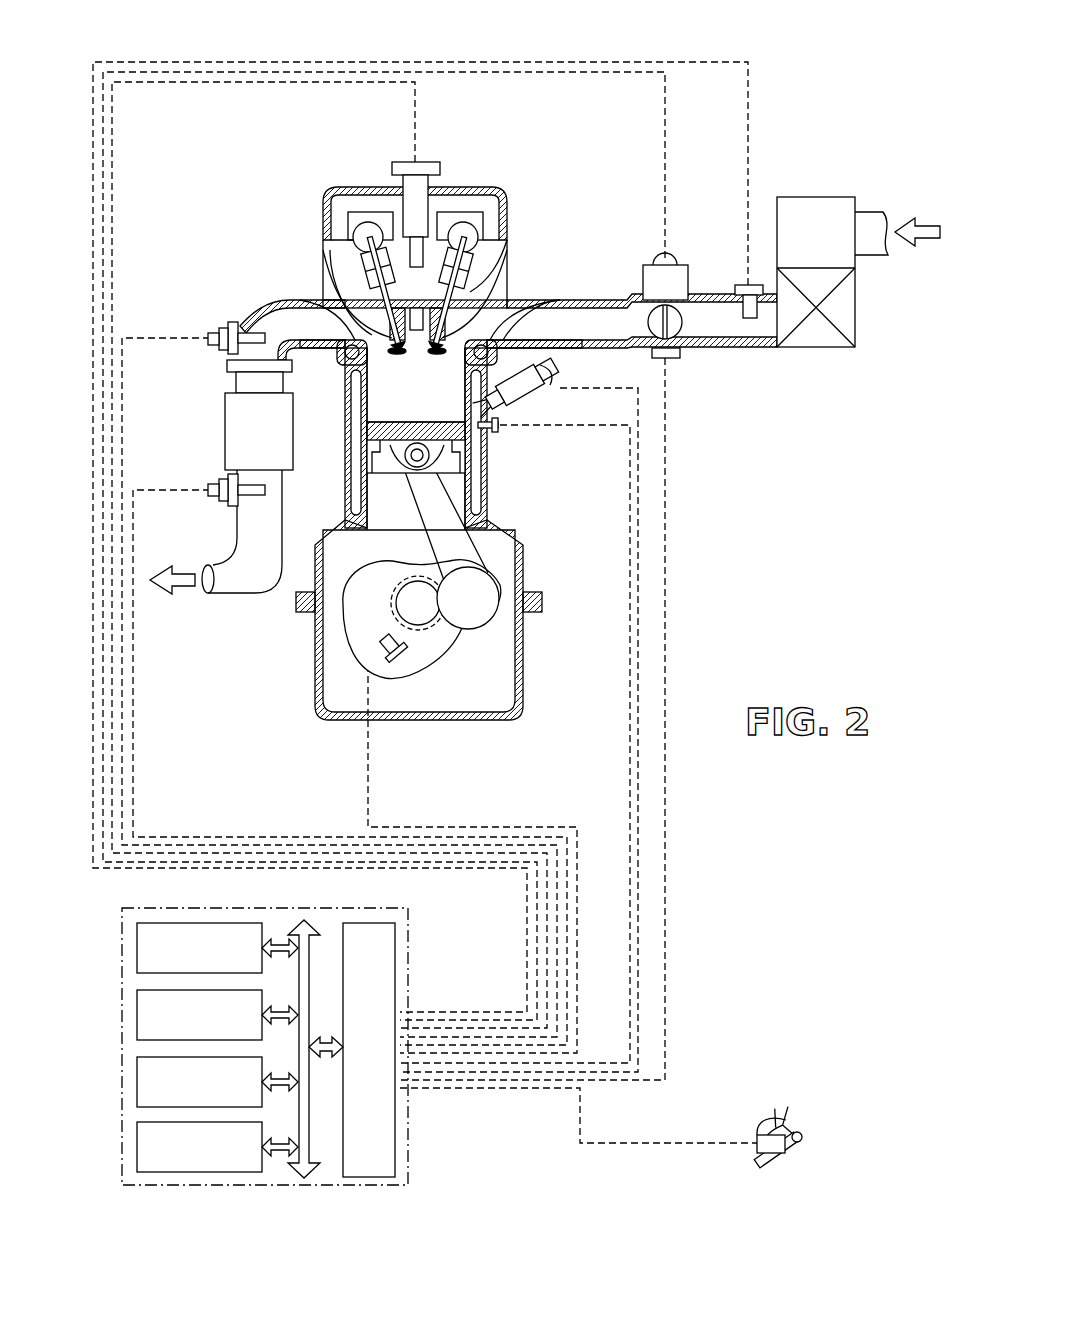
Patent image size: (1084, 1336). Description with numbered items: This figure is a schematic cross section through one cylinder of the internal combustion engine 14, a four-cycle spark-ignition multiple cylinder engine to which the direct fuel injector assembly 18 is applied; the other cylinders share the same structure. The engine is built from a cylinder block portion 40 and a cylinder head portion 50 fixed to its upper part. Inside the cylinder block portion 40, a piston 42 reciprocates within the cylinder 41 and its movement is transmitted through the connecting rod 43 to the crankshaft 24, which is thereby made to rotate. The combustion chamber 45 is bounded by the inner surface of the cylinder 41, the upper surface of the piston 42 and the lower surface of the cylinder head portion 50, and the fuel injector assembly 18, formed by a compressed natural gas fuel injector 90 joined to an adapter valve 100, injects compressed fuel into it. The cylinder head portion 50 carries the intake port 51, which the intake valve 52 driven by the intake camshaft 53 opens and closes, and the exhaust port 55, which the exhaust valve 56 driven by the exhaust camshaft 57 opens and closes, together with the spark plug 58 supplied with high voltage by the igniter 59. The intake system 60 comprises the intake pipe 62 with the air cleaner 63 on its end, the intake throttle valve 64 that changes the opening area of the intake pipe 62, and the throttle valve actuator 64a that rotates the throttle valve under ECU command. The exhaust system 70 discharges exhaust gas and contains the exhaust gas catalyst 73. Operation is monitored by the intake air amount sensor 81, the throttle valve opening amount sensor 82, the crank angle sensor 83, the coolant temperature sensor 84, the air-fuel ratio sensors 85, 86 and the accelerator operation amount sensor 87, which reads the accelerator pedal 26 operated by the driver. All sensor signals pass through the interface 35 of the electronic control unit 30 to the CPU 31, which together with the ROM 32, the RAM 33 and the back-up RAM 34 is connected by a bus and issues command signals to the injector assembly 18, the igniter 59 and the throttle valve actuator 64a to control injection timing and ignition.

The internal combustion engine 14 is at (733, 28).
The cylinder head portion 50 is at (258, 182).
The igniter 59 is at (427, 160).
The exhaust camshaft 57 is at (362, 222).
The intake camshaft 53 is at (470, 222).
The intake port 51 is at (495, 292).
The spark plug 58 is at (368, 302).
The exhaust port 55 is at (330, 322).
The intake valve 52 is at (475, 330).
The direct fuel injector assembly 18 is at (520, 352).
The exhaust system 70 is at (195, 310).
The air-fuel ratio sensor 85 is at (213, 350).
The exhaust valve 56 is at (349, 362).
The exhaust gas catalyst 73 is at (238, 437).
The air-fuel ratio sensor 86 is at (223, 500).
The combustion chamber 45 is at (416, 385).
The coolant temperature sensor 84 is at (500, 428).
The cylinder 41 is at (478, 446).
The piston 42 is at (443, 466).
The connecting rod 43 is at (487, 562).
The adapter valve 100 is at (515, 404).
The compressed natural gas fuel injector 90 is at (563, 383).
The throttle valve actuator 64a is at (672, 258).
The intake air amount sensor 81 is at (750, 284).
The air cleaner 63 is at (857, 322).
The intake pipe 62 is at (755, 350).
The intake throttle valve 64 is at (682, 328).
The throttle valve opening amount sensor 82 is at (675, 358).
The intake system 60 is at (760, 430).
The crankshaft 24 is at (395, 603).
The crank angle sensor 83 is at (380, 645).
The cylinder block portion 40 is at (468, 735).
The CPU 31 is at (137, 948).
The ROM 32 is at (137, 1015).
The RAM 33 is at (137, 1083).
The back-up RAM 34 is at (137, 1148).
The electronic control unit 30 is at (152, 1190).
The interface 35 is at (382, 1178).
The accelerator pedal 26 is at (762, 1118).
The accelerator operation amount sensor 87 is at (780, 1155).